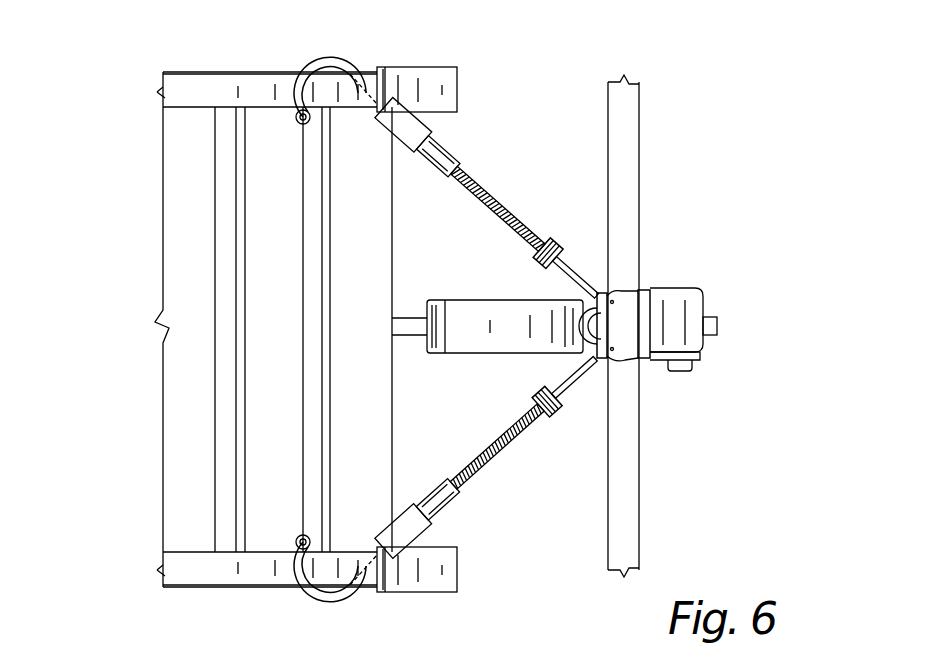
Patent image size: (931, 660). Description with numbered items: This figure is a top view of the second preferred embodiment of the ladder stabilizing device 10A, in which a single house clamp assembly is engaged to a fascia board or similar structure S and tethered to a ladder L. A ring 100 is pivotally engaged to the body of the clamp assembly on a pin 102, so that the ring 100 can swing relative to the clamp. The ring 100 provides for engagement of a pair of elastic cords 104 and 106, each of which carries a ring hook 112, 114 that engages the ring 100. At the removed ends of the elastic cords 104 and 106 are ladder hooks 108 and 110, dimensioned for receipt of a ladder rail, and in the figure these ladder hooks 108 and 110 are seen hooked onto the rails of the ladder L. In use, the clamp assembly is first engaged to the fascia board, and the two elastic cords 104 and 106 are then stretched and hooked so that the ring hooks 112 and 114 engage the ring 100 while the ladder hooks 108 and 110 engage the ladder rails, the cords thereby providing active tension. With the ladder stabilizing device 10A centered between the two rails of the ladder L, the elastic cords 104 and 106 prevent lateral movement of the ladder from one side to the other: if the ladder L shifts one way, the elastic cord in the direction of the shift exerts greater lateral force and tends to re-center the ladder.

The ladder stabilizing device 10A is at (687, 241).
The ring 100 is at (658, 293).
The pin 102 is at (683, 373).
The elastic cord 104 is at (500, 457).
The elastic cord 106 is at (507, 207).
The ladder hook 108 is at (310, 598).
The ladder hook 110 is at (317, 57).
The ring hook 112 is at (573, 273).
The ring hook 114 is at (563, 387).
The ladder L is at (152, 444).
The support structure S is at (640, 457).